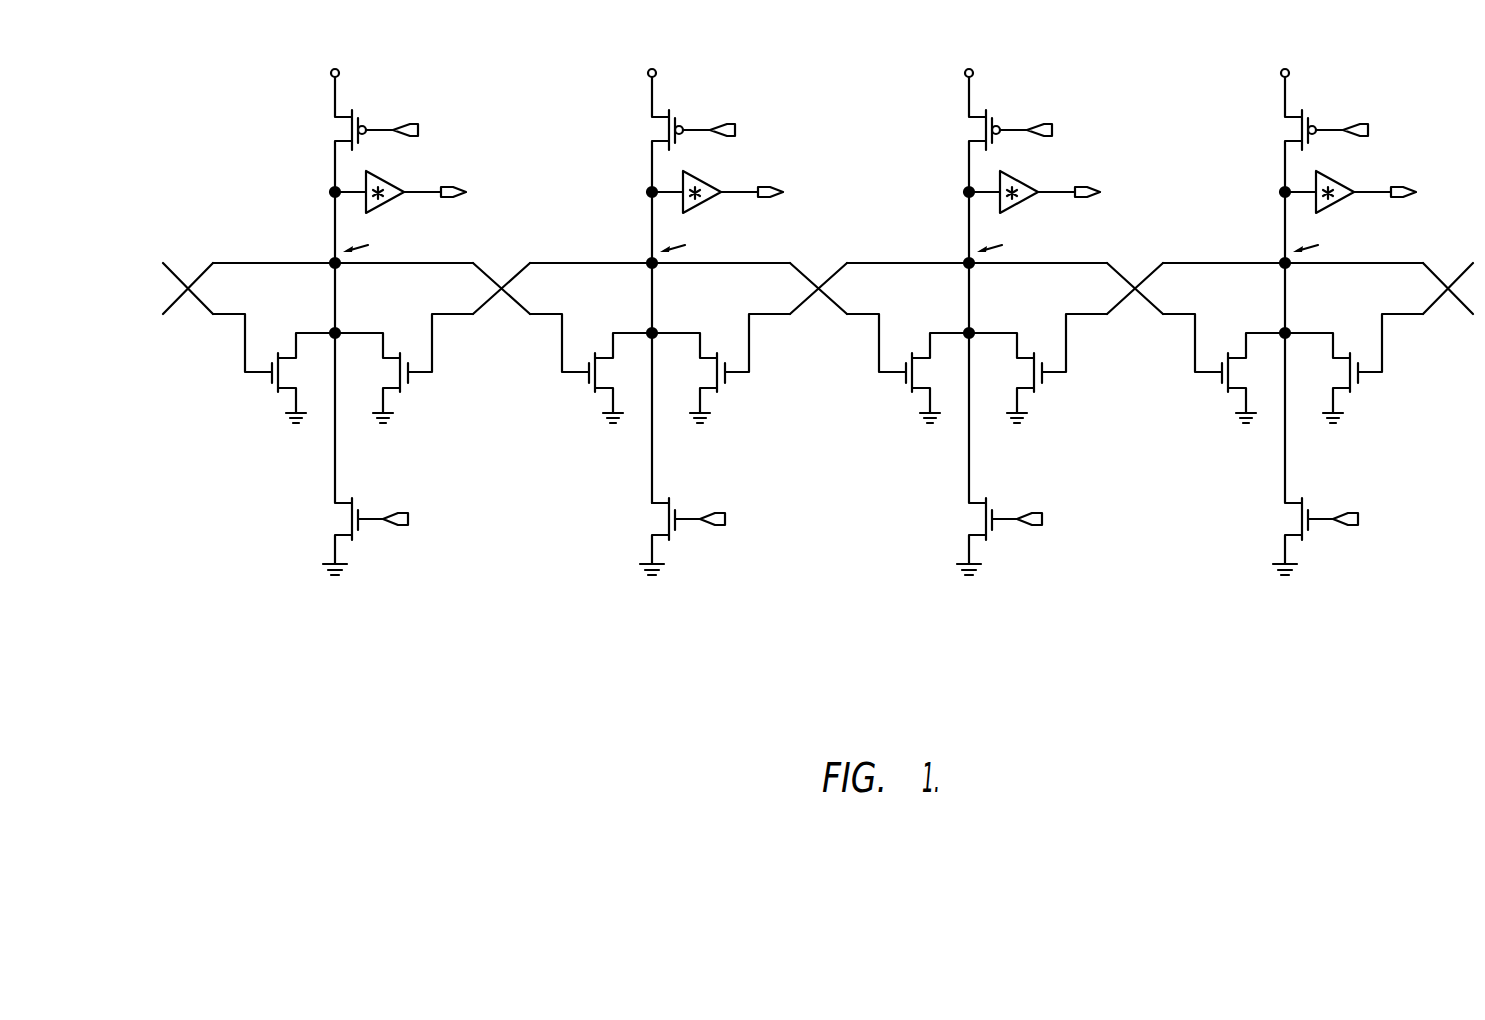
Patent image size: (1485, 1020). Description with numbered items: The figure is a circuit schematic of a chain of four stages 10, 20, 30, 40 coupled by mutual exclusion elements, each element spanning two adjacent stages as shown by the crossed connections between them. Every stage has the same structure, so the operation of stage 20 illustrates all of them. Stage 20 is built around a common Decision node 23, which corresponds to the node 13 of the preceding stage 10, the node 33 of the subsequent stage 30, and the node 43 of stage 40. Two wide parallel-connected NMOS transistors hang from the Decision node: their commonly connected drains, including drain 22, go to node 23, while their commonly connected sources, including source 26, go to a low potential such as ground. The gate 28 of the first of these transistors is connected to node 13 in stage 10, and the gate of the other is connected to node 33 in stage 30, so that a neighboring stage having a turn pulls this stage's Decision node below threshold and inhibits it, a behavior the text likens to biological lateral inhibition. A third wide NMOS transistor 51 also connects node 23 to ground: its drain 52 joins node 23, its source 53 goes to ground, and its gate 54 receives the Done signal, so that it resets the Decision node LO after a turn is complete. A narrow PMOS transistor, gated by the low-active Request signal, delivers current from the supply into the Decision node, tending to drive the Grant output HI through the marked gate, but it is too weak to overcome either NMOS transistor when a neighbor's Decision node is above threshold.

The stage 10 is at (343, 598).
The stage 20 is at (665, 598).
The stage 30 is at (983, 598).
The stage 40 is at (1298, 598).
The node 13 is at (332, 259).
The node 23 is at (649, 259).
The node 33 is at (966, 259).
The node 43 is at (1282, 259).
The drain 22 is at (612, 341).
The source 26 is at (607, 397).
The gate 28 is at (578, 376).
The transistor 51 is at (648, 513).
The drain 52 is at (660, 503).
The source 53 is at (652, 540).
The gate 54 is at (690, 523).